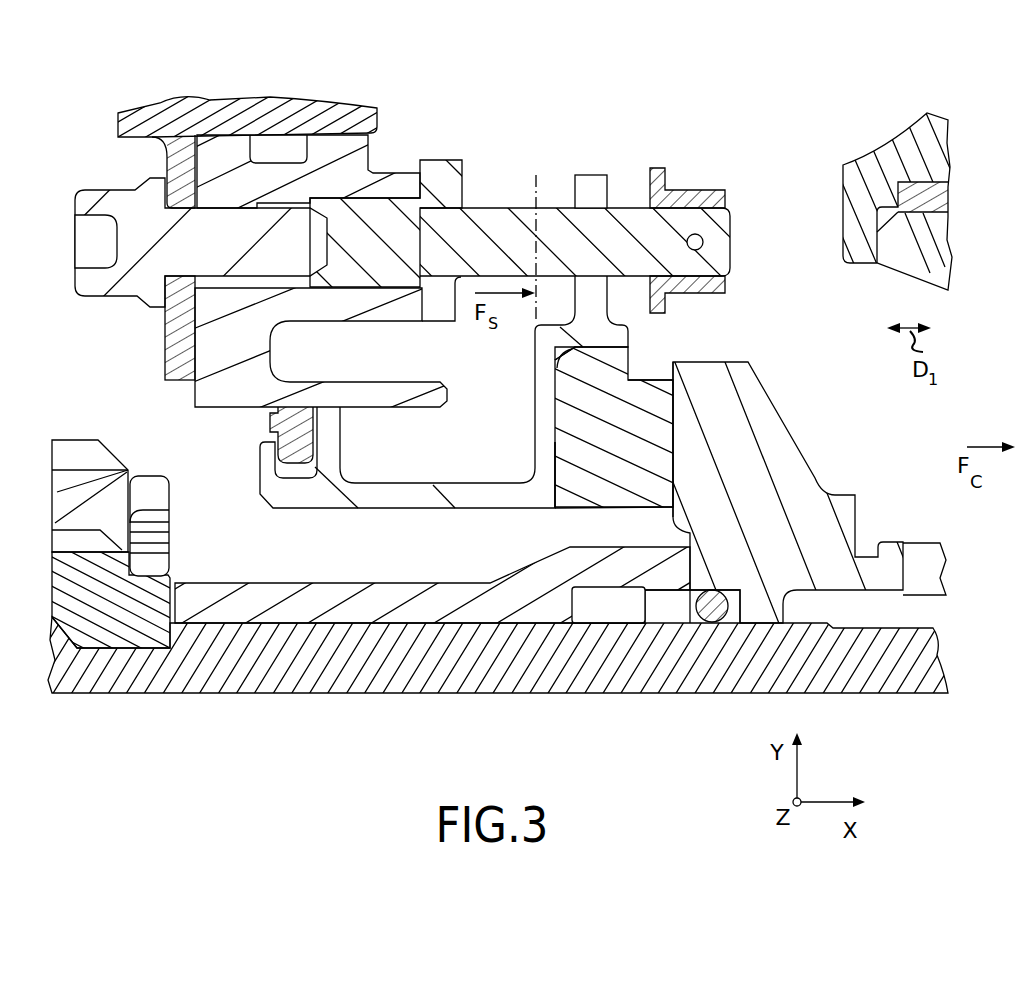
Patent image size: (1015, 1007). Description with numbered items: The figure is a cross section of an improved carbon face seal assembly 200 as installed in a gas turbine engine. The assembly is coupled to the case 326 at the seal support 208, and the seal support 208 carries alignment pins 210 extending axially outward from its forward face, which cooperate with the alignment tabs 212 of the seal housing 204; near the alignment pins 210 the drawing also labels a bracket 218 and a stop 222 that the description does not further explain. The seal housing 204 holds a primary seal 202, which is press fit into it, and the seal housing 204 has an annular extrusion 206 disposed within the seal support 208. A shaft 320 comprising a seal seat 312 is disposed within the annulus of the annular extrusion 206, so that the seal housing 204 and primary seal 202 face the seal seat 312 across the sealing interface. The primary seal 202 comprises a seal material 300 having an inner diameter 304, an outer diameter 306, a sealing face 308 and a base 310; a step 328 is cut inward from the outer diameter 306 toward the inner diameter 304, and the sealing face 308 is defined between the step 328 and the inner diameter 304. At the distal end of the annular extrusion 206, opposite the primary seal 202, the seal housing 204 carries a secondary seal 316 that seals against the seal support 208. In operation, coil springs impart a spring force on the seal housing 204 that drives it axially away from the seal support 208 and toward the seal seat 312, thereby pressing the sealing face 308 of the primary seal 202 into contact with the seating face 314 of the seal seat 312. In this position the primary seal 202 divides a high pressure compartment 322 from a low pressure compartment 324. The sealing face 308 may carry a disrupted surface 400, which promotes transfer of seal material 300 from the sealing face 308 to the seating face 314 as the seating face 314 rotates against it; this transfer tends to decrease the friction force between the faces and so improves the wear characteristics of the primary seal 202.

The improved carbon face seal assembly 200 is at (570, 141).
The primary seal 202 is at (676, 353).
The seal housing 204 is at (545, 345).
The annular extrusion 206 is at (407, 494).
The seal support 208 is at (216, 350).
The alignment pins 210 is at (470, 260).
The alignment tabs 212 is at (588, 197).
The retaining clip 218 is at (658, 177).
The stop 222 is at (607, 187).
The seal material 300 is at (594, 464).
The inner diameter 304 is at (580, 497).
The outer diameter 306 is at (608, 348).
The sealing face 308 is at (668, 392).
The base 310 is at (555, 442).
The seal seat 312 is at (765, 410).
The seating face 314 is at (673, 438).
The secondary seal 316 is at (278, 423).
The shaft 320 is at (424, 671).
The high pressure compartment 322 is at (254, 564).
The low pressure compartment 324 is at (802, 334).
The case 326 is at (216, 124).
The step 328 is at (621, 391).
The disrupted surface 400 is at (690, 472).